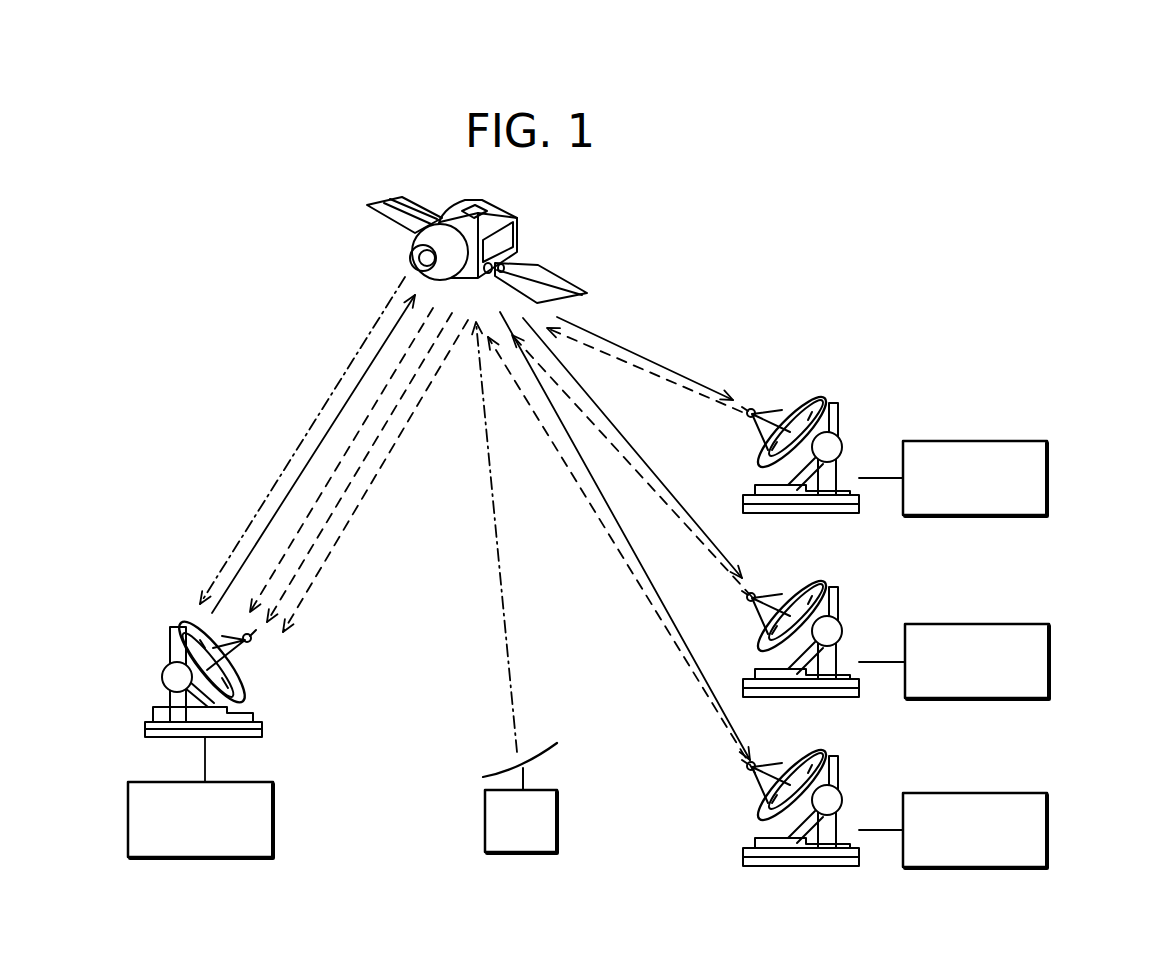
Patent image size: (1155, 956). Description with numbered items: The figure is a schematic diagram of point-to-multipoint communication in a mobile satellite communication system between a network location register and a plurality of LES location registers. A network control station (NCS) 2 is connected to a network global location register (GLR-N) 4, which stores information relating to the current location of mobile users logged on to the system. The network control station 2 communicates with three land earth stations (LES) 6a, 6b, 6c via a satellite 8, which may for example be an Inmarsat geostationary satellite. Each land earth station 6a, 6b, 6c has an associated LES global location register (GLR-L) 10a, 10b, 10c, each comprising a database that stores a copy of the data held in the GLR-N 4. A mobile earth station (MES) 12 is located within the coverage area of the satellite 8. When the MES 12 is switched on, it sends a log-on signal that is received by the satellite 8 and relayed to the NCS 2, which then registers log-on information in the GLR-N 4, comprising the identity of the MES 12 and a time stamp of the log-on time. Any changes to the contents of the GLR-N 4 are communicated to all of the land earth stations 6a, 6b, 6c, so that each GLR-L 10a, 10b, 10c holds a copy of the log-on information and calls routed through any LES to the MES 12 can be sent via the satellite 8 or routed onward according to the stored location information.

The network control station (NCS) 2 is at (145, 705).
The network global location register (GLR-N) 4 is at (128, 820).
The land earth station (LES) 6a is at (838, 436).
The land earth station (LES) 6b is at (840, 622).
The land earth station (LES) 6c is at (843, 795).
The satellite 8 is at (517, 218).
The LES global location register (GLR-L) 10a is at (1012, 441).
The LES global location register (GLR-L) 10b is at (1050, 625).
The LES global location register (GLR-L) 10c is at (1050, 793).
The mobile earth station (MES) 12 is at (485, 812).